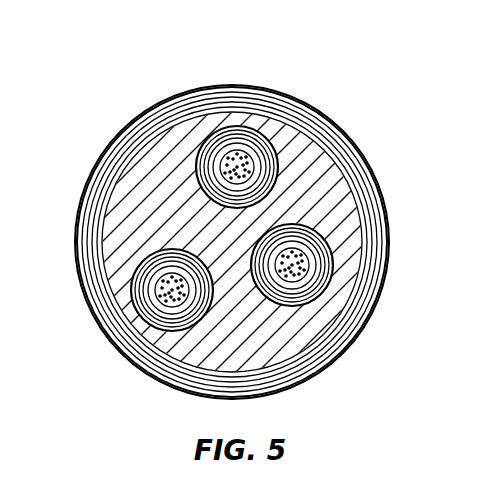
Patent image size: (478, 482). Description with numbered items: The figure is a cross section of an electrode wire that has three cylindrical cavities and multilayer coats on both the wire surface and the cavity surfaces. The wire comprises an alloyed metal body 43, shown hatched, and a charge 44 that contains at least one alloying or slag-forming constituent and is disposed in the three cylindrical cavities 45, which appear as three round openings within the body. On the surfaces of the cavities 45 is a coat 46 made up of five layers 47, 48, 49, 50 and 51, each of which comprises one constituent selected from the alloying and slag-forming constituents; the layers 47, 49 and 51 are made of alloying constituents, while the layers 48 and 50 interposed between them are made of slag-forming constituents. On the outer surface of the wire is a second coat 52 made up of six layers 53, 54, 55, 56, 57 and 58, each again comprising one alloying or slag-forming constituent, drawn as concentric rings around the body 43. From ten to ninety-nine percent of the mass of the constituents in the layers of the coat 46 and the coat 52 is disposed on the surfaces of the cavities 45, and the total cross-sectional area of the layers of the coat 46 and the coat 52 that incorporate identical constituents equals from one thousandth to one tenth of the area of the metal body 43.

The alloyed metal body 43 is at (298, 142).
The charge 44 is at (241, 152).
The cylindrical cavities 45 is at (241, 150).
The coat 46 is at (150, 298).
The layer 47 is at (205, 182).
The layer 48 is at (212, 175).
The layer 49 is at (206, 165).
The layer 50 is at (202, 154).
The layer 51 is at (205, 140).
The coat 52 is at (348, 155).
The layer 53 is at (372, 188).
The layer 54 is at (367, 227).
The layer 55 is at (378, 252).
The layer 56 is at (362, 277).
The layer 57 is at (370, 322).
The layer 58 is at (350, 342).